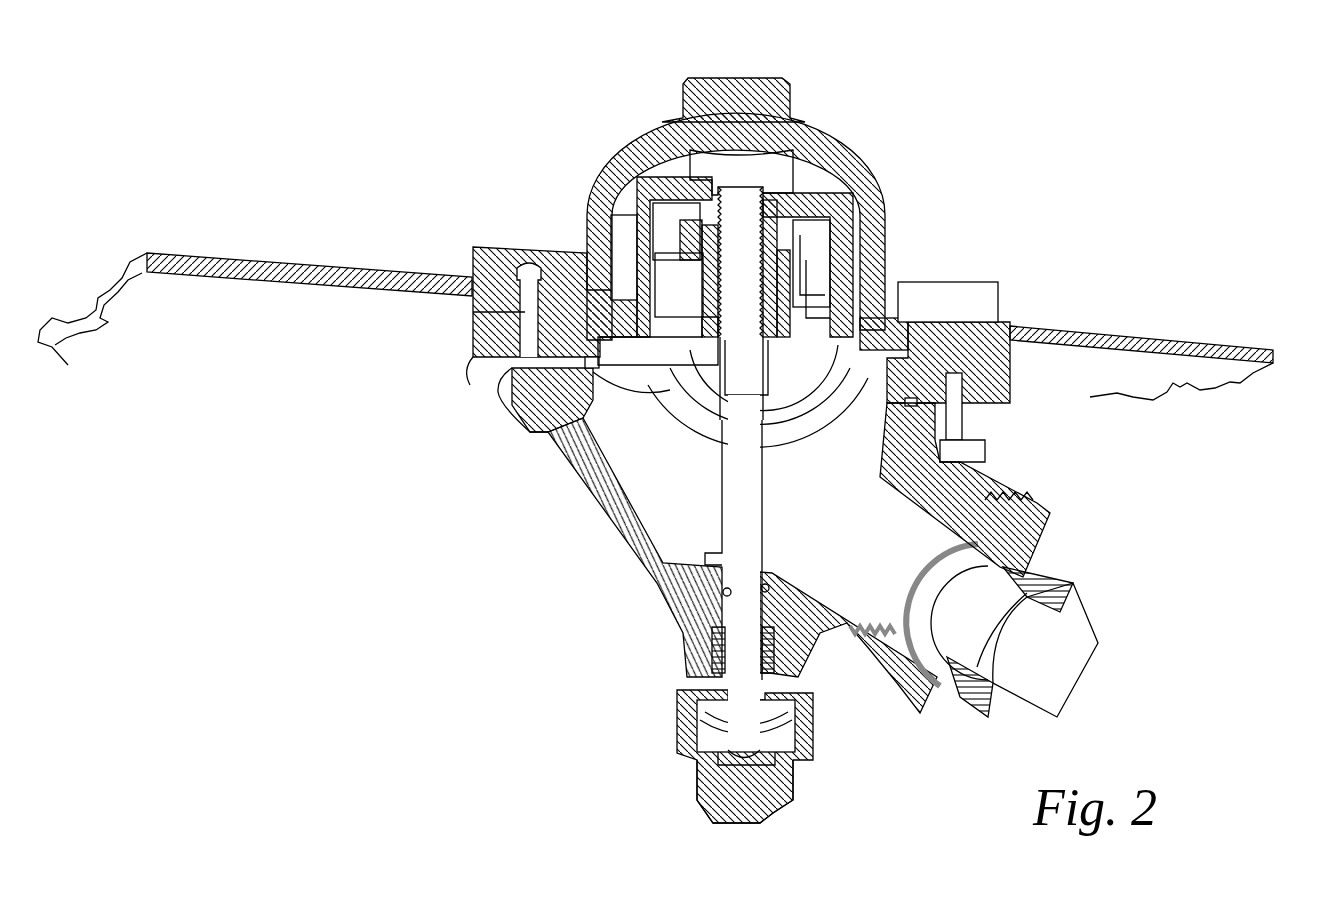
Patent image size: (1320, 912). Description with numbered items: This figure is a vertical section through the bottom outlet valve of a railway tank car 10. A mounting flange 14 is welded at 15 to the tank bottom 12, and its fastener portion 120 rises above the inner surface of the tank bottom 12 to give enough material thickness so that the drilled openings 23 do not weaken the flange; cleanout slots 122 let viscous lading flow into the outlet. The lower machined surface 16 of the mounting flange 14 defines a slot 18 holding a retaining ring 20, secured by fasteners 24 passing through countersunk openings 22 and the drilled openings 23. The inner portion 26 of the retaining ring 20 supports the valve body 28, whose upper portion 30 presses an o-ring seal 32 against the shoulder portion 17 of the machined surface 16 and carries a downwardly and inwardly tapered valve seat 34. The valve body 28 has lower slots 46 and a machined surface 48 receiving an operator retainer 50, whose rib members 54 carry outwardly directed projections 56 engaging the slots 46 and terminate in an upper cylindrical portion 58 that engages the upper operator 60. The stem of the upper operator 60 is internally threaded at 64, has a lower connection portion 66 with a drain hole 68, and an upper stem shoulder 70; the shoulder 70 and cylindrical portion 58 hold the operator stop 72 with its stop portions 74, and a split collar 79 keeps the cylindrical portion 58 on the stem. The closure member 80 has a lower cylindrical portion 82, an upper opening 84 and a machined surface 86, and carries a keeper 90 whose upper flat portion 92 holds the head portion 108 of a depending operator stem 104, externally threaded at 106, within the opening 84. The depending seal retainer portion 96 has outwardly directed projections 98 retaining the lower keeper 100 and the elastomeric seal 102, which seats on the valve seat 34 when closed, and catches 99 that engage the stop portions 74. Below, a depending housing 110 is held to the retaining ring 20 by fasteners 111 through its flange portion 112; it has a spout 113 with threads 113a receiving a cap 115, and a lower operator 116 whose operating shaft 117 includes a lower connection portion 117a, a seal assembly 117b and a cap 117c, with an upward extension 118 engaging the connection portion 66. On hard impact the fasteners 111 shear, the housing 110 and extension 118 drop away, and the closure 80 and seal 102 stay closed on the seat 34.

The railway tank car 10 is at (1238, 368).
The tank bottom 12 is at (1193, 340).
The mounting flange 14 is at (475, 393).
The weld 15 is at (1018, 347).
The lower machined surface 16 is at (1012, 380).
The shoulder portion 17 is at (565, 300).
The slot 18 is at (1000, 395).
The retaining ring 20 is at (1010, 403).
The countersunk openings 22 is at (500, 360).
The drilled openings 23 is at (505, 340).
The fasteners 24 is at (473, 313).
The inner portion 26 is at (914, 426).
The valve body 28 is at (512, 410).
The upper portion 30 is at (887, 285).
The o-ring seal 32 is at (580, 318).
The valve seat 34 is at (603, 205).
The lower slots 46 is at (700, 376).
The machined surface 48 is at (896, 410).
The operator retainer 50 is at (686, 452).
The rib members 54 is at (638, 352).
The outwardly directed projections 56 is at (608, 369).
The upper cylindrical portion 58 is at (668, 280).
The upper operator 60 is at (882, 237).
The internal threads 64 is at (764, 297).
The lower connection portion 66 is at (755, 349).
The drain hole 68 is at (722, 380).
The upper stem shoulder 70 is at (762, 180).
The operator stop 72 is at (805, 212).
The stop portions 74 is at (843, 232).
The split collar 79 is at (876, 230).
The closure member 80 is at (751, 75).
The lower cylindrical portion 82 is at (883, 267).
The upper opening 84 is at (774, 146).
The machined surface 86 is at (806, 192).
The keeper 90 is at (651, 182).
The upper flat portion 92 is at (681, 180).
The seal retainer portion 96 is at (636, 178).
The outwardly directed projections 98 is at (865, 365).
The catches 99 is at (790, 408).
The lower keeper 100 is at (892, 280).
The elastomeric seal 102 is at (906, 292).
The depending operator stem 104 is at (726, 250).
The external threads 106 is at (764, 203).
The head portion 108 is at (728, 189).
The depending housing 110 is at (550, 430).
The fasteners 111 is at (996, 458).
The flange portion 112 is at (968, 430).
The spout 113 is at (858, 622).
The threads 113a is at (883, 690).
The cap 115 is at (1066, 576).
The lower operator 116 is at (674, 657).
The operating shaft 117 is at (740, 681).
The lower connection portion 117a is at (778, 753).
The seal assembly 117b is at (722, 588).
The cap 117c is at (694, 727).
The upward extension 118 is at (731, 508).
The fastener portion 120 is at (487, 250).
The slots 122 is at (857, 410).